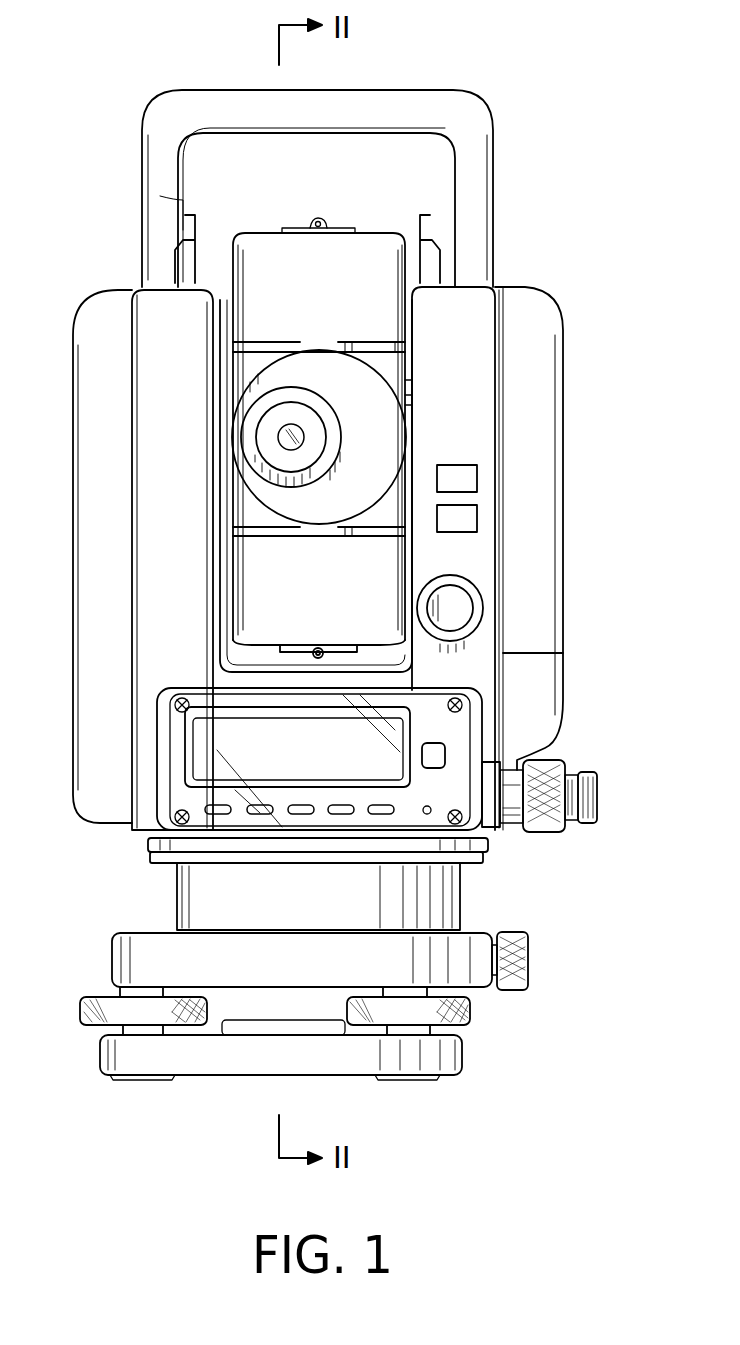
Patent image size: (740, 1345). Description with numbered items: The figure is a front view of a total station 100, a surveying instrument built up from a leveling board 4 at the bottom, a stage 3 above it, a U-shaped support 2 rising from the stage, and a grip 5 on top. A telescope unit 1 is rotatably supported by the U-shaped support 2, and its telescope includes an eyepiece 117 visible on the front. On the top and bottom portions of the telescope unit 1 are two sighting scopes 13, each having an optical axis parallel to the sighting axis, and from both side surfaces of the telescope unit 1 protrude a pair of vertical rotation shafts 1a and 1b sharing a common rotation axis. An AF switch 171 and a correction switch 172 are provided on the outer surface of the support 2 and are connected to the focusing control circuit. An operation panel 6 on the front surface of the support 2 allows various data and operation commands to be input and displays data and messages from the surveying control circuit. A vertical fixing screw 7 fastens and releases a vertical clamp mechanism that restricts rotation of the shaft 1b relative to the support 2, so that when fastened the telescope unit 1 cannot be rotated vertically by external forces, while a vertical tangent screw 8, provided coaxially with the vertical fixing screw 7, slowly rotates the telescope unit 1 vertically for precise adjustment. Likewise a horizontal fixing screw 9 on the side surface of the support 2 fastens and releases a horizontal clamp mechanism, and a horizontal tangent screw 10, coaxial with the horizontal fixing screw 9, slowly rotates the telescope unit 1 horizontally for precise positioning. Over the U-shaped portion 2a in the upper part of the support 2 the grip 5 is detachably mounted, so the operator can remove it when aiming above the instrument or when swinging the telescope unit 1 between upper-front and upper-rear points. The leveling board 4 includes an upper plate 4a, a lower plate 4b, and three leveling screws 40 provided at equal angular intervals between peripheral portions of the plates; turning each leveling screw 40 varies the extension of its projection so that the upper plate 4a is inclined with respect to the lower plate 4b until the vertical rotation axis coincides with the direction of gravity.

The total station 100 is at (574, 92).
The grip 5 is at (380, 98).
The U-shaped support 2 is at (528, 300).
The U-shaped portion 2a is at (215, 292).
The sighting scope 13 is at (320, 218).
The telescope unit 1 is at (378, 232).
The vertical rotation shaft 1a is at (230, 485).
The vertical rotation shaft 1b is at (410, 388).
The eyepiece 117 is at (298, 430).
The AF switch 171 is at (440, 464).
The correction switch 172 is at (475, 562).
The vertical fixing screw 7 is at (462, 607).
The vertical tangent screw 8 is at (487, 622).
The operation panel 6 is at (192, 686).
The horizontal fixing screw 9 is at (594, 798).
The horizontal tangent screw 10 is at (545, 833).
The stage 3 is at (455, 897).
The leveling board 4 is at (55, 925).
The upper plate 4a is at (120, 962).
The lower plate 4b is at (118, 1063).
The leveling screw 40 is at (205, 1008).